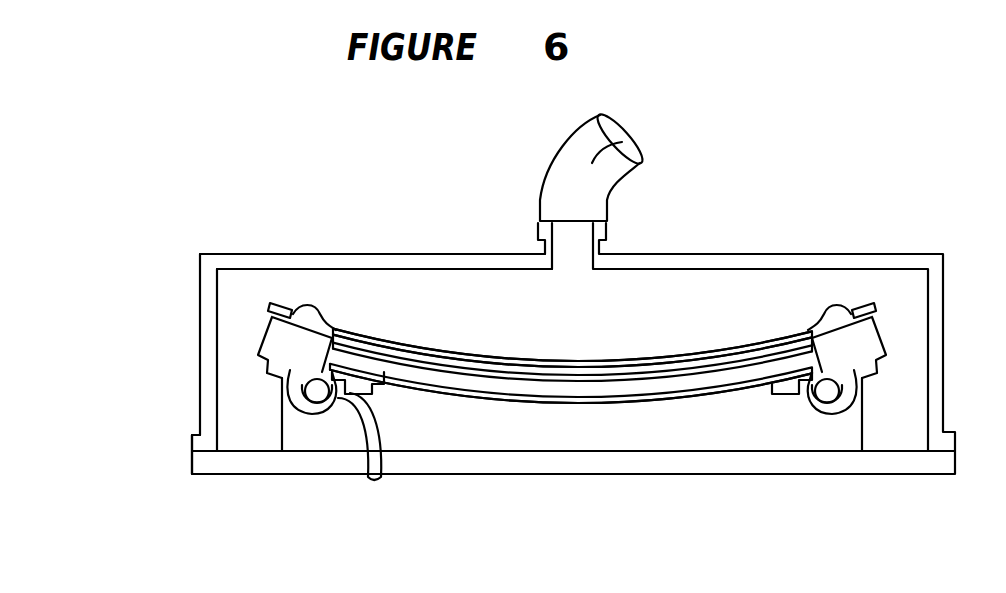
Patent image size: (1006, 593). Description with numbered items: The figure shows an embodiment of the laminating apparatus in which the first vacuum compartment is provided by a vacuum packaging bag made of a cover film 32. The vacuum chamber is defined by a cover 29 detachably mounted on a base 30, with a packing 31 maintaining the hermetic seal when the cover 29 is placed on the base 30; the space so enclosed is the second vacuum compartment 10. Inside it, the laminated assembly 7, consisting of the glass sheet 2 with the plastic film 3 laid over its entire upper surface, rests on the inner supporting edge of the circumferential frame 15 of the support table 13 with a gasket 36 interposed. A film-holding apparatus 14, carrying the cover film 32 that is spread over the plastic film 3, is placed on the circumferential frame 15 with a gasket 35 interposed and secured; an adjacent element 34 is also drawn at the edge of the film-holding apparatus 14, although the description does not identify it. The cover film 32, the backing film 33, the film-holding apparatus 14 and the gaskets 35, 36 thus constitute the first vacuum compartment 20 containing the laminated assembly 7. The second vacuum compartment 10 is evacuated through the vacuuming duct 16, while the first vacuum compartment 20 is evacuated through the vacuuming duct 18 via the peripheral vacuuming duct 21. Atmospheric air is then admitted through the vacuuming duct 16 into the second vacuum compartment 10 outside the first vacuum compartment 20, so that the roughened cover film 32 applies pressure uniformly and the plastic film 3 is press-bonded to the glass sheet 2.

The glass sheet 2 is at (533, 388).
The plastic film 3 is at (417, 362).
The laminated assembly 7 is at (653, 366).
The second vacuum compartment 10 is at (890, 298).
The support table 13 is at (276, 393).
The film-holding apparatus 14 is at (859, 304).
The circumferential frame 15 is at (272, 340).
The vacuuming duct 16 is at (622, 125).
The vacuuming duct 18 is at (367, 482).
The first vacuum compartment 20 is at (376, 342).
The peripheral vacuuming duct 21 is at (322, 360).
The cover 29 is at (238, 265).
The base 30 is at (250, 477).
The packing 31 is at (202, 477).
The cover film 32 is at (703, 355).
The backing film 33 is at (417, 392).
The retaining strip 34 is at (285, 304).
The gasket 35 is at (313, 323).
The gasket 36 is at (333, 407).